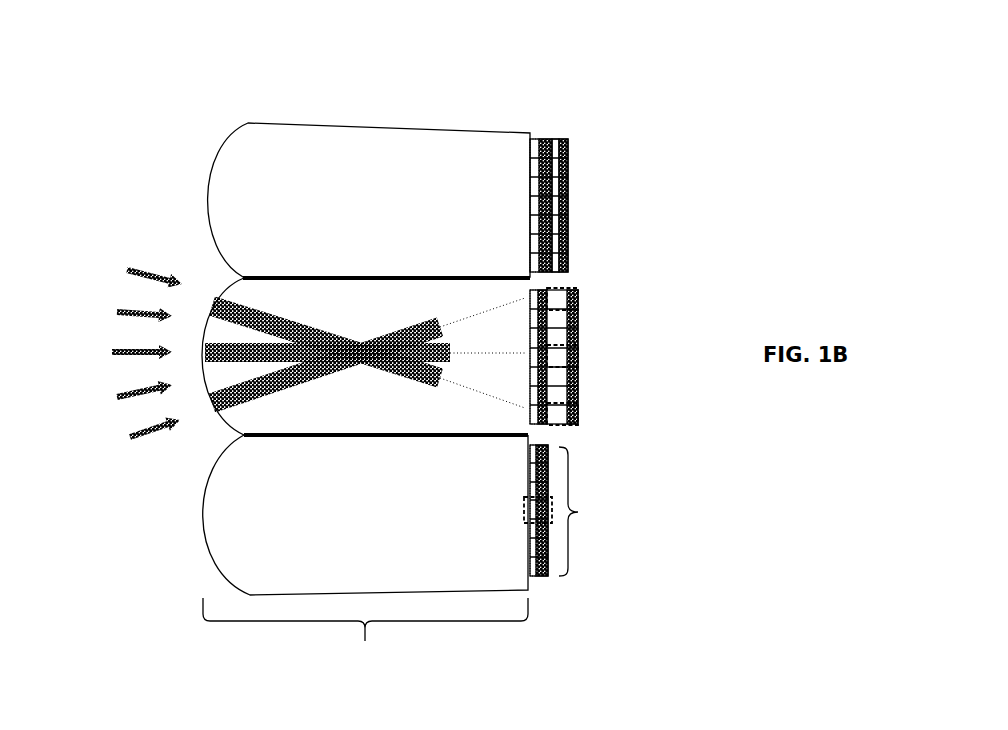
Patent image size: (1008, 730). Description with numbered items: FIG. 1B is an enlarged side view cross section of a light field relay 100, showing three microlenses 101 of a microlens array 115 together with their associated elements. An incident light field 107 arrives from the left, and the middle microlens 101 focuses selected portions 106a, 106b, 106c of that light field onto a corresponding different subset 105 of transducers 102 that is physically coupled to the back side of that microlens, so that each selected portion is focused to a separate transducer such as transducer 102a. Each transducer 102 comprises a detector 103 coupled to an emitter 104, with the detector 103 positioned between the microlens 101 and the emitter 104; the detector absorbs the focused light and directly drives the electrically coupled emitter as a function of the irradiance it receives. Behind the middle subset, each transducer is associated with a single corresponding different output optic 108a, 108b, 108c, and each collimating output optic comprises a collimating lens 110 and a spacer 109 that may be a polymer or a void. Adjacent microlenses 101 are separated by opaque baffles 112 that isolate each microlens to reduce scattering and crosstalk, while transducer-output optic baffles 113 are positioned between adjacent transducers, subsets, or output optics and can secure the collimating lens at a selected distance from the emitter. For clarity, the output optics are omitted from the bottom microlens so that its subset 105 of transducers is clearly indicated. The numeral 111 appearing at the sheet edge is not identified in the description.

The light field relay 100 is at (760, 242).
The microlens 101 is at (366, 140).
The transducer 102 is at (520, 505).
The transducer 102a is at (490, 720).
The detector 103 is at (545, 148).
The emitter 104 is at (552, 150).
The subset of transducers 105 is at (580, 512).
The selected portion of incident light field 106a is at (424, 333).
The selected portion of incident light field 106b is at (436, 350).
The selected portion of incident light field 106c is at (420, 376).
The incident light field 107 is at (108, 341).
The output optic 108a is at (580, 300).
The output optic 108b is at (582, 356).
The output optic 108c is at (582, 412).
The spacer 109 is at (553, 208).
The collimating lens 110 is at (568, 165).
The component 111 is at (573, 722).
The opaque baffle 112 is at (297, 274).
The transducer-output optic baffle 113 is at (548, 256).
The microlens array 115 is at (365, 639).